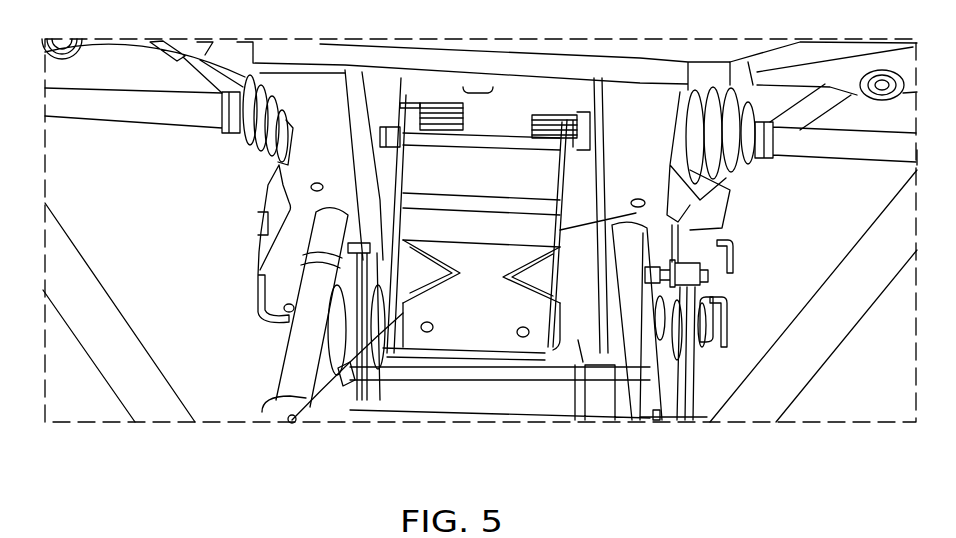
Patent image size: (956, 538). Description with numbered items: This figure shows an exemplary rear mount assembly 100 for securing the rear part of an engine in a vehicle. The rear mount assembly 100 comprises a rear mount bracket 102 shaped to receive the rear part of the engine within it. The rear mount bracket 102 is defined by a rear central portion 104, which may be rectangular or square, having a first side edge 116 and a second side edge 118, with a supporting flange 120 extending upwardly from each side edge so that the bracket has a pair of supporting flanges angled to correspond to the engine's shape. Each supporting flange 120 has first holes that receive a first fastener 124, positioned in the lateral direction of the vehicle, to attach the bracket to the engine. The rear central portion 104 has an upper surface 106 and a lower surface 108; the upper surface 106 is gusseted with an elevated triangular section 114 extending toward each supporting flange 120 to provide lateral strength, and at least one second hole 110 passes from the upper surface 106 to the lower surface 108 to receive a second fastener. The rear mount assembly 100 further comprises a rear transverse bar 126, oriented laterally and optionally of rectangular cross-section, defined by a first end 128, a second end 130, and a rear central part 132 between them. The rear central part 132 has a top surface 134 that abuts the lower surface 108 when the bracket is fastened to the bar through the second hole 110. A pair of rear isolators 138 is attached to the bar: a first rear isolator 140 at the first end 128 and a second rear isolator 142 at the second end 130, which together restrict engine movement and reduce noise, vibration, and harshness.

The rear mount assembly 100 is at (212, 285).
The rear mount bracket 102 is at (387, 160).
The rear central portion 104 is at (487, 277).
The upper surface 106 is at (502, 343).
The lower surface 108 is at (655, 262).
The second hole 110 is at (427, 322).
The elevated triangular section 114 is at (428, 283).
The first side edge 116 is at (290, 422).
The second side edge 118 is at (485, 275).
The supporting flange 120 is at (410, 205).
The first fastener 124 is at (525, 150).
The rear transverse bar 126 is at (583, 362).
The first end 128 is at (343, 319).
The second end 130 is at (650, 330).
The rear central part 132 is at (593, 337).
The top surface 134 is at (584, 350).
The pair of rear isolators 138 is at (342, 363).
The first rear isolator 140 is at (365, 340).
The second rear isolator 142 is at (707, 373).